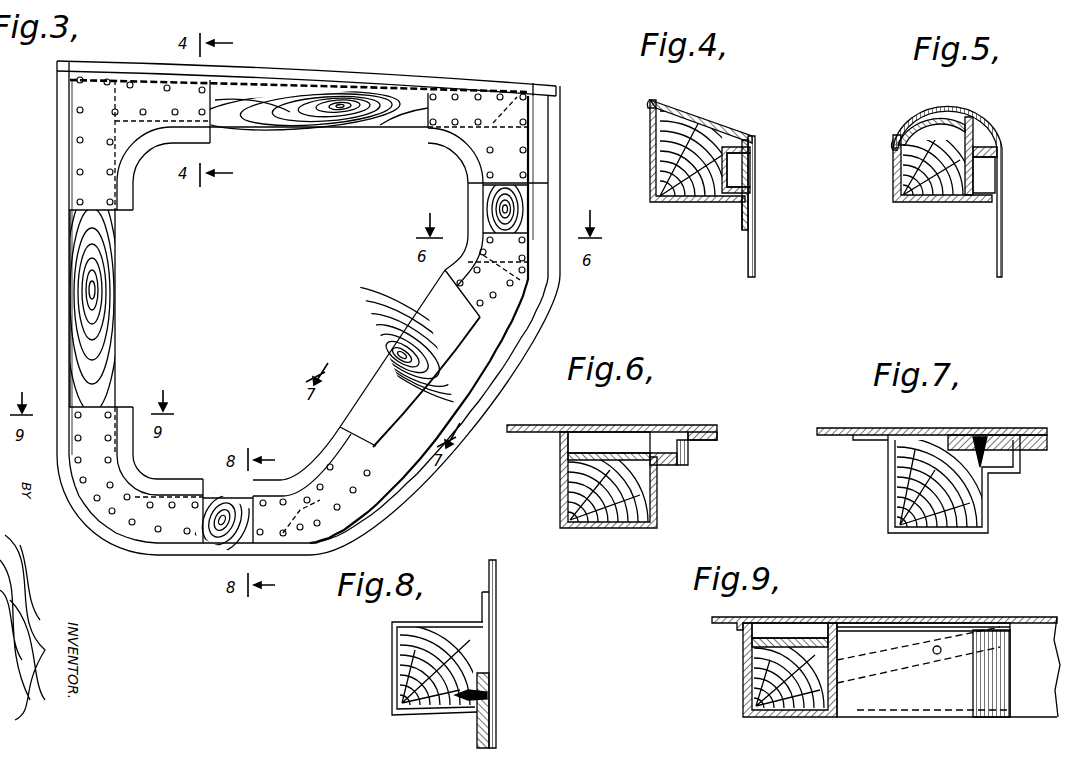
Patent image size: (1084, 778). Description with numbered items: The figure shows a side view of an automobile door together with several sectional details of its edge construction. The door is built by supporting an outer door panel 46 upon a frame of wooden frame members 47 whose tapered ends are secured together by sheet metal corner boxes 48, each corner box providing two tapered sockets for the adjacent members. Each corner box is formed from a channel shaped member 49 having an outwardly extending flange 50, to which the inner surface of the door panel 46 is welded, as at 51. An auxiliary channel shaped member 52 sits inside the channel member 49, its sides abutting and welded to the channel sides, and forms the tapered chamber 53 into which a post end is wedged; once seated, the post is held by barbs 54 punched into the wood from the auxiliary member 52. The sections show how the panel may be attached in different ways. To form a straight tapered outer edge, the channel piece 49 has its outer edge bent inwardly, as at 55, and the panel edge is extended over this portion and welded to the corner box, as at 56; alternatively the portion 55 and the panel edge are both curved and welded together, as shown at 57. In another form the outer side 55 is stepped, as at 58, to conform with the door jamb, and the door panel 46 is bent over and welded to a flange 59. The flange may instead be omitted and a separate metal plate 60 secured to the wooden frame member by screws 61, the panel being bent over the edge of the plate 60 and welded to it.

In FIG. 3, the outer door panel 46 is at (378, 152).
In FIG. 4, the outer door panel 46 is at (755, 245).
In FIG. 5, the outer door panel 46 is at (1002, 245).
In FIG. 6, the outer door panel 46 is at (668, 425).
In FIG. 7, the outer door panel 46 is at (851, 433).
In FIG. 8, the outer door panel 46 is at (492, 625).
In FIG. 9, the outer door panel 46 is at (975, 617).
In FIG. 3, the wooden frame members 47 is at (284, 104).
In FIG. 4, the wooden frame members 47 is at (657, 200).
In FIG. 5, the wooden frame members 47 is at (896, 178).
In FIG. 7, the wooden frame members 47 is at (910, 488).
In FIG. 8, the wooden frame members 47 is at (408, 660).
In FIG. 9, the wooden frame members 47 is at (745, 684).
In FIG. 3, the sheet metal corner boxes 48 is at (122, 180).
In FIG. 9, the sheet metal corner boxes 48 is at (857, 703).
In FIG. 3, the channel shaped member 49 is at (467, 268).
In FIG. 4, the channel shaped member 49 is at (650, 156).
In FIG. 5, the channel shaped member 49 is at (895, 153).
In FIG. 6, the channel shaped member 49 is at (585, 528).
In FIG. 7, the channel shaped member 49 is at (955, 533).
In FIG. 8, the channel shaped member 49 is at (392, 637).
In FIG. 9, the channel shaped member 49 is at (785, 717).
In FIG. 3, the outwardly extending flange 50 is at (197, 135).
In FIG. 4, the outwardly extending flange 50 is at (745, 222).
In FIG. 7, the outwardly extending flange 50 is at (878, 443).
In FIG. 8, the outwardly extending flange 50 is at (483, 608).
In FIG. 9, the outwardly extending flange 50 is at (870, 623).
In FIG. 3, the weld 51 is at (421, 319).
In FIG. 4, the weld 51 is at (755, 213).
In FIG. 9, the weld 51 is at (855, 627).
In FIG. 4, the auxiliary channel shaped member 52 is at (750, 182).
In FIG. 5, the auxiliary channel shaped member 52 is at (997, 165).
In FIG. 6, the auxiliary channel shaped member 52 is at (630, 453).
In FIG. 9, the auxiliary channel shaped member 52 is at (795, 638).
In FIG. 9, the tapered chamber 53 is at (938, 708).
In FIG. 4, the barbs 54 is at (740, 163).
In FIG. 5, the barbs 54 is at (930, 202).
In FIG. 6, the barbs 54 is at (585, 450).
In FIG. 4, the inwardly bent outer edge 55 is at (727, 110).
In FIG. 5, the inwardly bent outer edge 55 is at (955, 110).
In FIG. 6, the inwardly bent outer edge 55 is at (655, 492).
In FIG. 3, the weld 56 is at (290, 84).
In FIG. 4, the weld 56 is at (650, 104).
In FIG. 5, the curved welded edge 57 is at (930, 108).
In FIG. 6, the step 58 is at (680, 467).
In FIG. 6, the flange 59 is at (697, 446).
In FIG. 7, the separate metal plate 60 is at (1018, 435).
In FIG. 8, the separate metal plate 60 is at (490, 720).
In FIG. 7, the screws 61 is at (988, 436).
In FIG. 8, the screws 61 is at (490, 690).